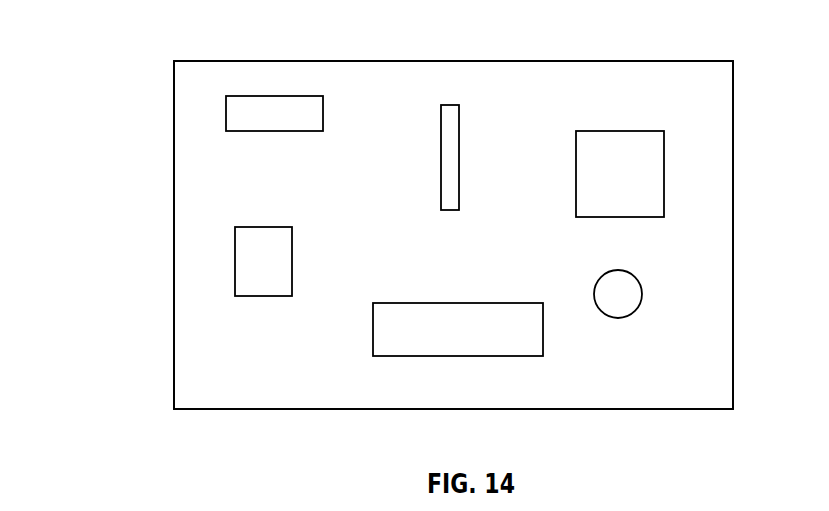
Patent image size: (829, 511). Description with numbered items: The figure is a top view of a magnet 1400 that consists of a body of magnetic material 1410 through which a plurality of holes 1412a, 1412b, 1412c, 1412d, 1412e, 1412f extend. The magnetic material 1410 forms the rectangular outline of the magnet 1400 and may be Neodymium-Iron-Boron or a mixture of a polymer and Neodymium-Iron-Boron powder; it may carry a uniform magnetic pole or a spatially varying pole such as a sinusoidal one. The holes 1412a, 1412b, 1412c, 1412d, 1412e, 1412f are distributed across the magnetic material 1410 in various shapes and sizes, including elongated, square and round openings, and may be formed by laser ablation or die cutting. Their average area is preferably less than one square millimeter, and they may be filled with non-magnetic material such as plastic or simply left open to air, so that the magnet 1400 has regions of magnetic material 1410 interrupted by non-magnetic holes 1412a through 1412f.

The magnet 1400 is at (136, 31).
The magnetic material 1410 is at (623, 390).
The hole 1412a is at (285, 132).
The hole 1412b is at (275, 297).
The hole 1412c is at (440, 193).
The hole 1412d is at (372, 340).
The hole 1412e is at (576, 210).
The hole 1412f is at (628, 271).